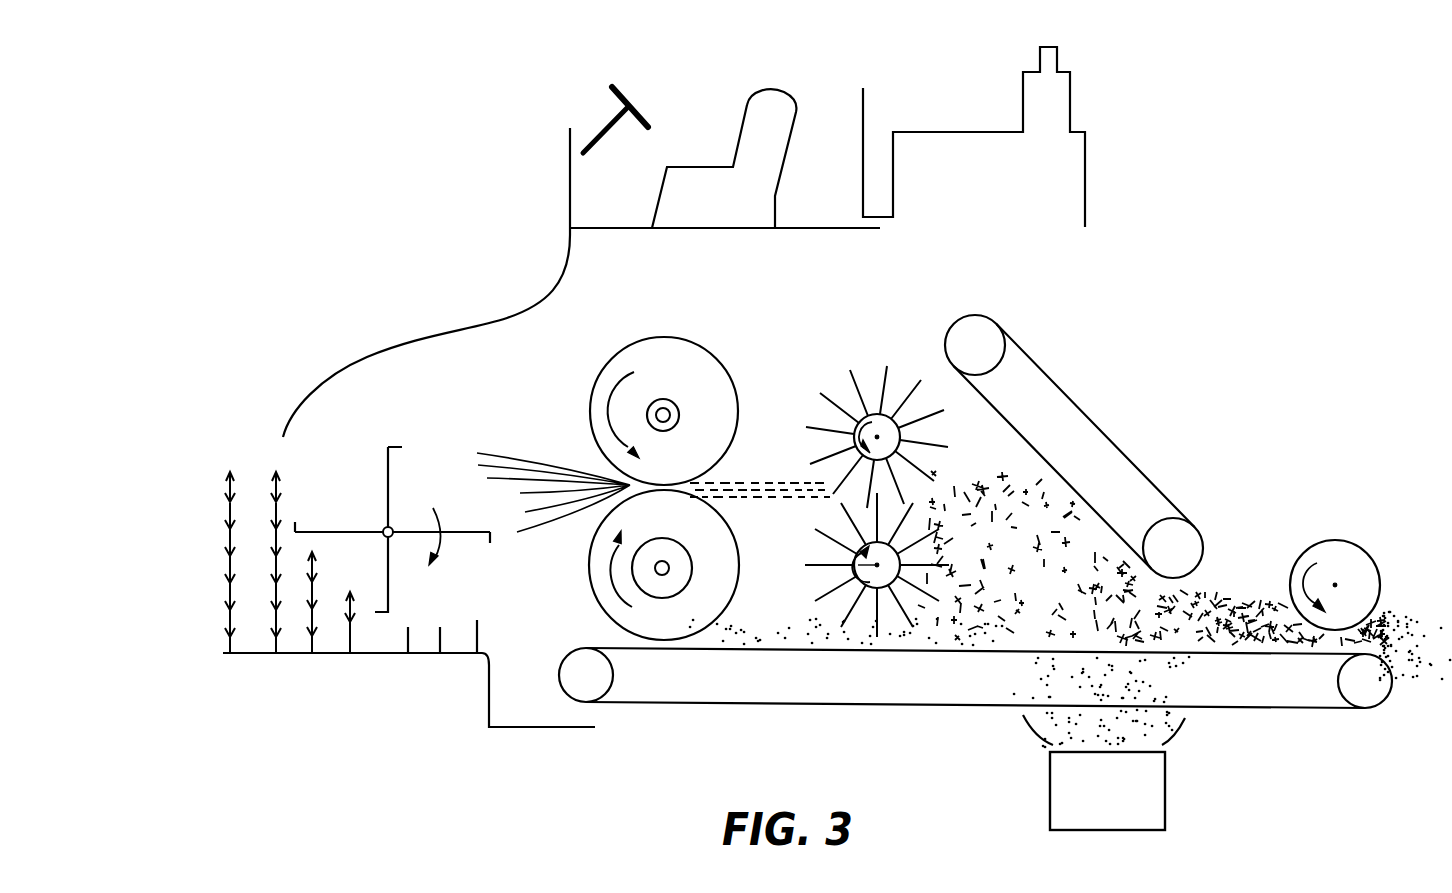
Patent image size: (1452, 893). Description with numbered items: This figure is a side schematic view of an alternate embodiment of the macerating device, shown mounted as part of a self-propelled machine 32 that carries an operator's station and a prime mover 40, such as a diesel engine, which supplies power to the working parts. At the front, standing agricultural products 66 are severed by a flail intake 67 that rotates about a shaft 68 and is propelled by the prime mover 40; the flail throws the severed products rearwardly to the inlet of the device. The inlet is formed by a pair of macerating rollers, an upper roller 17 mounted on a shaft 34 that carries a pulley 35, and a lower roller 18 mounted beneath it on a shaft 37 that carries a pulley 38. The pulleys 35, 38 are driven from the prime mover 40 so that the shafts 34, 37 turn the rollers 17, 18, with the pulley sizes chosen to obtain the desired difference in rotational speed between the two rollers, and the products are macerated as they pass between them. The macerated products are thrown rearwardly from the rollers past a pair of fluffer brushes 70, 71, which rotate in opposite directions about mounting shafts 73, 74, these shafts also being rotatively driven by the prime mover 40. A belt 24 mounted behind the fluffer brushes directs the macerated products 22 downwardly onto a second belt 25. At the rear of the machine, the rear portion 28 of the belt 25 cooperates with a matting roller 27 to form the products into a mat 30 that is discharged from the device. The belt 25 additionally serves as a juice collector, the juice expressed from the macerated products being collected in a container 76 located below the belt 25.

The macerating roller 17 is at (627, 350).
The macerating roller 18 is at (588, 572).
The macerated products 22 is at (745, 480).
The belt 24 is at (1065, 390).
The belt 25 is at (933, 706).
The matting roller 27 is at (1294, 565).
The rear portion of belt 28 is at (1340, 656).
The mat 30 is at (1420, 670).
The self-propelled machine 32 is at (570, 213).
The shaft 34 is at (680, 414).
The pulley 35 is at (662, 399).
The shaft 37 is at (665, 576).
The pulley 38 is at (685, 555).
The prime mover 40 is at (1015, 192).
The agricultural products 66 is at (315, 628).
The flail intake 67 is at (306, 518).
The shaft 68 is at (383, 540).
The fluffer brush 70 is at (880, 380).
The fluffer brush 71 is at (928, 592).
The mounting shaft 73 is at (880, 437).
The mounting shaft 74 is at (850, 565).
The container 76 is at (1165, 784).